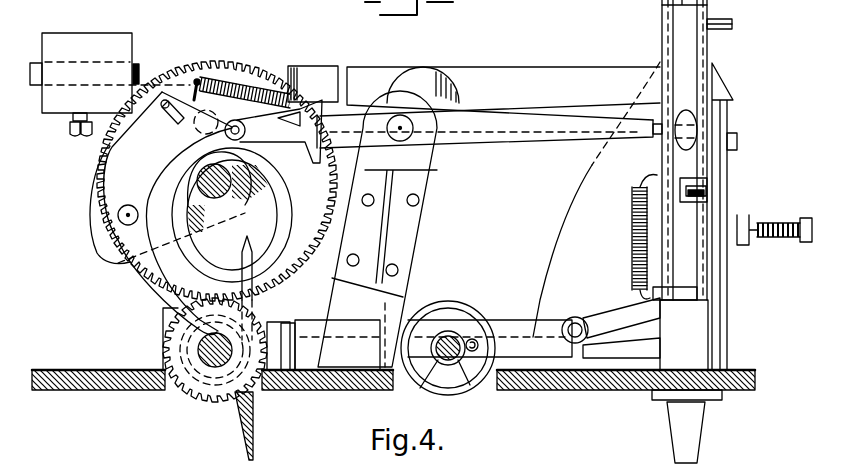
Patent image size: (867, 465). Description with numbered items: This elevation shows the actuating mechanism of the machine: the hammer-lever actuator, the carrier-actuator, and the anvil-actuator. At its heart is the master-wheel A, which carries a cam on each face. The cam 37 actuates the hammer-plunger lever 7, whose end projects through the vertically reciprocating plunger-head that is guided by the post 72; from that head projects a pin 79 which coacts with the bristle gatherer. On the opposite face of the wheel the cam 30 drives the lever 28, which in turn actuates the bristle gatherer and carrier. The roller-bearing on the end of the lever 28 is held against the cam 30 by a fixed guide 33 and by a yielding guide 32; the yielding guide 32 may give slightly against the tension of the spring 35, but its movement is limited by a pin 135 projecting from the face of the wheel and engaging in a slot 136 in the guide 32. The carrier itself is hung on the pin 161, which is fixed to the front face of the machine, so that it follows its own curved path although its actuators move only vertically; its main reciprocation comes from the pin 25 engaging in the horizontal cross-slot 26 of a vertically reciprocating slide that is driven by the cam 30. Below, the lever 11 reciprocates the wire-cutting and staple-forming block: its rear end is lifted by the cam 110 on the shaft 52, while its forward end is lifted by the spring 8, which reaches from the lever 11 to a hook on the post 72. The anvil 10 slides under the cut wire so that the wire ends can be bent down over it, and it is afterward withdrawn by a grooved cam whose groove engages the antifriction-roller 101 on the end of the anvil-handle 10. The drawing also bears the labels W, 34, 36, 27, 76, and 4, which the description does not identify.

The motor W is at (110, 84).
The master-wheel A is at (223, 62).
The pin 135 is at (190, 88).
The slot 136 is at (175, 105).
The yielding guide 32 is at (167, 124).
The roller 34 is at (139, 215).
The cam 37 is at (100, 240).
The fixed guide 33 is at (174, 213).
The cam 30 is at (278, 176).
The spring 35 is at (255, 79).
The bracket block 36 is at (313, 84).
The hammer-plunger lever 7 is at (503, 93).
The driving-lever 28 is at (489, 229).
The post 72 is at (664, 24).
The pin 79 is at (733, 24).
The bracket 27 is at (705, 177).
The horizontal cross-slot 26 is at (708, 184).
The pin 25 is at (702, 194).
The pin 161 is at (776, 242).
The rod 76 is at (596, 199).
The spring 8 is at (630, 250).
The lever 11 is at (611, 328).
The anvil 10 is at (652, 348).
The antifriction-roller 101 is at (476, 341).
The cam 110 is at (478, 383).
The roller 4 is at (455, 378).
The shaft 52 is at (438, 360).